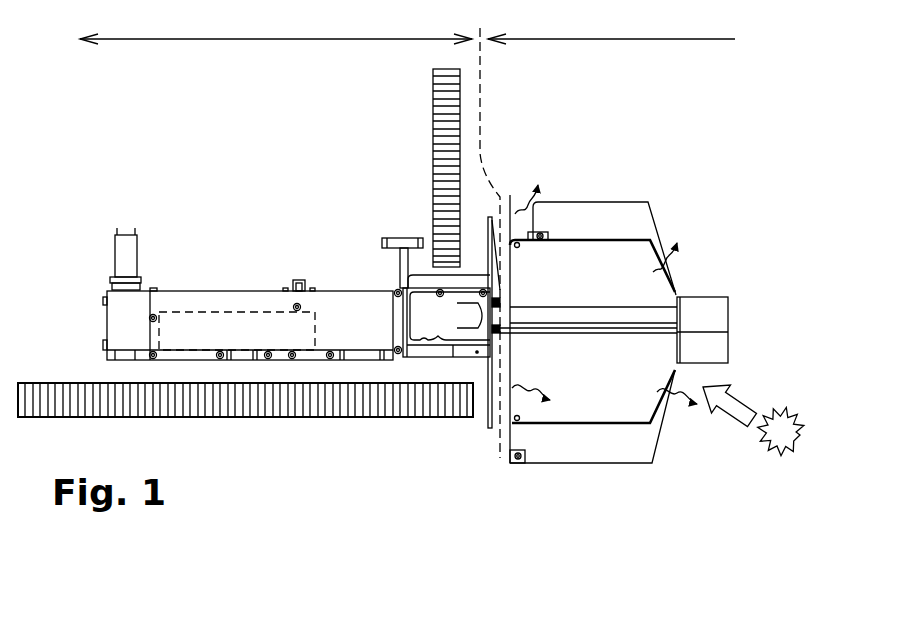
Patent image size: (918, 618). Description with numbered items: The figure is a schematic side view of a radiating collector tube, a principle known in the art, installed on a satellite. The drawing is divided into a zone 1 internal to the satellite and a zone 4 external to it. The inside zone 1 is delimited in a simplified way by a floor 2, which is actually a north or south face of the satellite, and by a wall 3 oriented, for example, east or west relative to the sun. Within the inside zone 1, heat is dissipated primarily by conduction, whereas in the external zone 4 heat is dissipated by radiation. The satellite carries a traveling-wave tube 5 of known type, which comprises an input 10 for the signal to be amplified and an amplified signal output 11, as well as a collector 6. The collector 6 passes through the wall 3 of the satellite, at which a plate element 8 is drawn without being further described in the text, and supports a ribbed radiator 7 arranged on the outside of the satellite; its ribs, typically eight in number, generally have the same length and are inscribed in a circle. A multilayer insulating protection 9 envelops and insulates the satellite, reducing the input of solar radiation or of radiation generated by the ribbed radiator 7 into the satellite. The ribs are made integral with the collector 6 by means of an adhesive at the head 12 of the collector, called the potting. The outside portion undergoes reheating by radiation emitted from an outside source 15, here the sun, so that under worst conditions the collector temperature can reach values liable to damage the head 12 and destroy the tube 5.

The zone internal to the satellite 1 is at (276, 28).
The floor 2 is at (217, 410).
The wall 3 is at (433, 113).
The zone external to the satellite 4 is at (611, 27).
The traveling-wave tube 5 is at (262, 272).
The collector 6 is at (434, 338).
The ribbed radiator 7 is at (551, 471).
The mounting plate 8 is at (488, 421).
The multilayer insulating protection 9 is at (499, 450).
The input 10 is at (125, 260).
The amplified signal output 11 is at (401, 237).
The head of the collector 12 is at (697, 313).
The outside source 15 is at (751, 449).